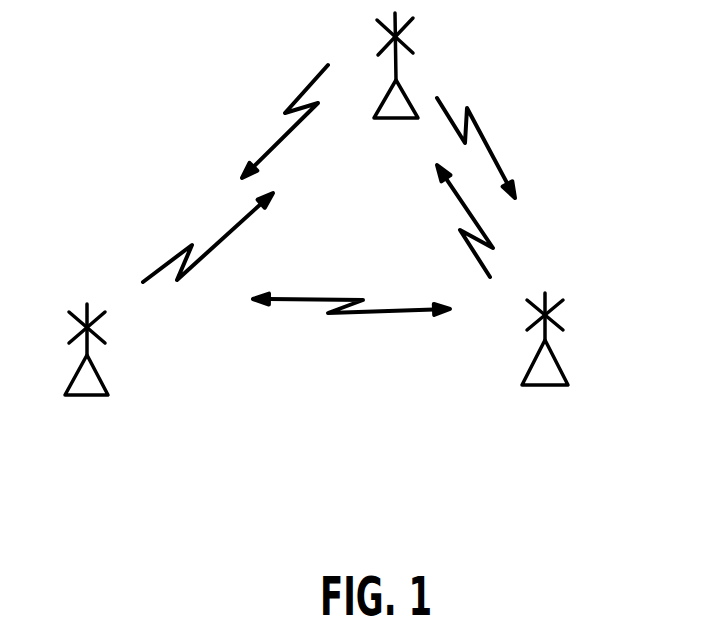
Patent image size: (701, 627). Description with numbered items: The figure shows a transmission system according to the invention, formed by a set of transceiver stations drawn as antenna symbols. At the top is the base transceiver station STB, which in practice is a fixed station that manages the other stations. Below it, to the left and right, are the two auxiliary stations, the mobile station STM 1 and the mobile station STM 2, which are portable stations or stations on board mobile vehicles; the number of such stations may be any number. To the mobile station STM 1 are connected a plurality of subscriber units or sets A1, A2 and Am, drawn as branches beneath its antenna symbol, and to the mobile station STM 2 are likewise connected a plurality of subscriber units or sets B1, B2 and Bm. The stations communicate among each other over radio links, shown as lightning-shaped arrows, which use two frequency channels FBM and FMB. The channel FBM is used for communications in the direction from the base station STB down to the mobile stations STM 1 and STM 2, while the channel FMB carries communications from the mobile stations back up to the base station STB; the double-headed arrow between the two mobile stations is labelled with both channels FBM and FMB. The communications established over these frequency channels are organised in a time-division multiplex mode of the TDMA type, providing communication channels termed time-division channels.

The base transceiver station STB is at (392, 118).
The mobile station STM 1 is at (100, 378).
The mobile station STM 2 is at (557, 365).
The subscriber unit A1 is at (68, 395).
The subscriber unit A2 is at (88, 395).
The subscriber unit Am is at (105, 395).
The subscriber unit B1 is at (525, 385).
The subscriber unit B2 is at (545, 385).
The subscriber unit Bm is at (565, 385).
The frequency channel FBM is at (505, 104).
The frequency channel FMB is at (245, 218).